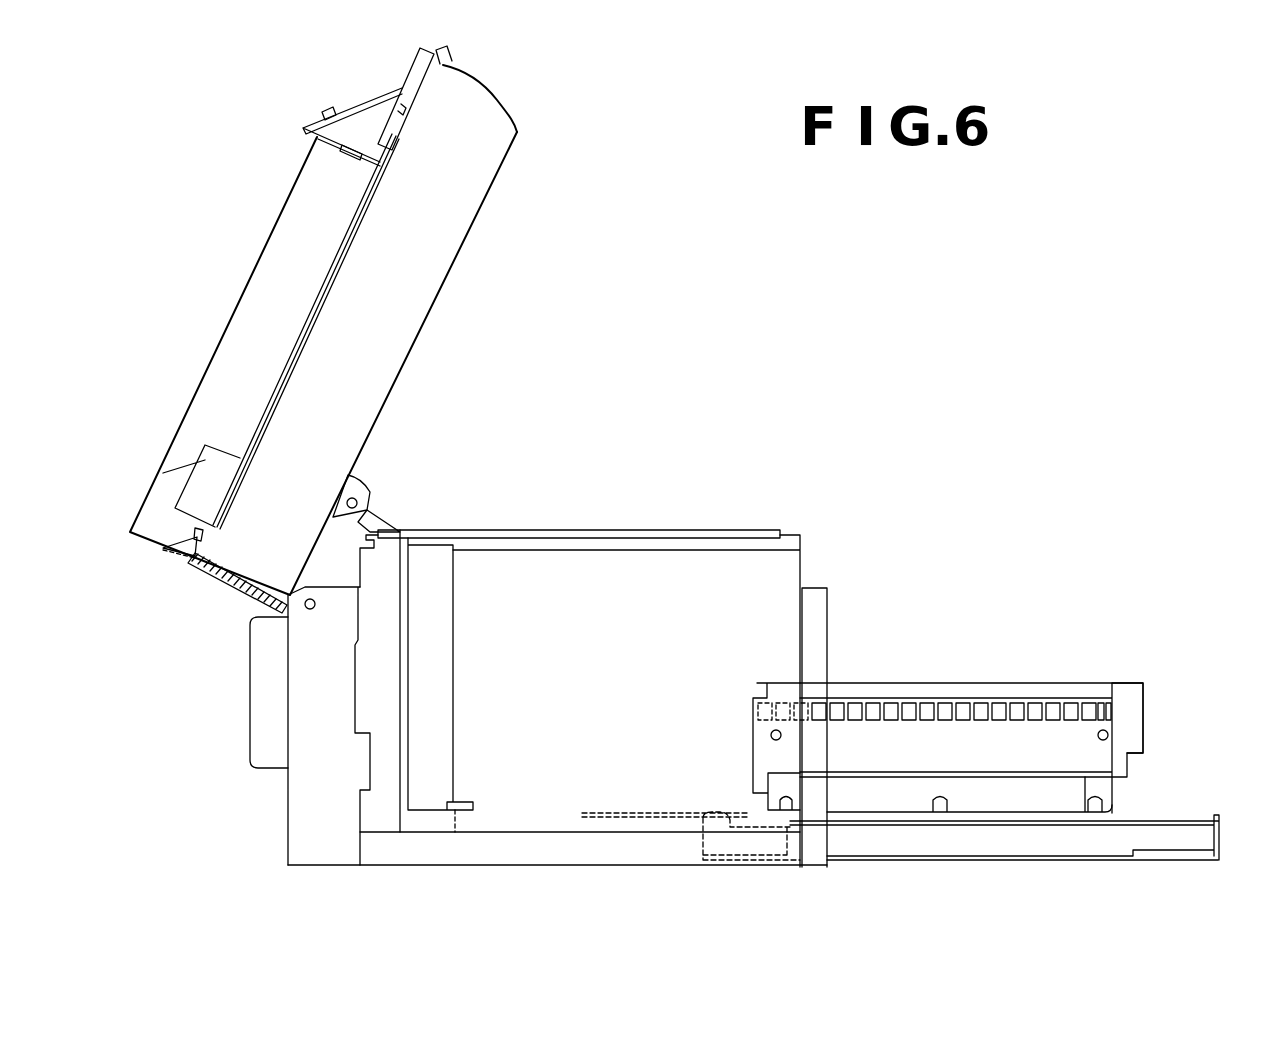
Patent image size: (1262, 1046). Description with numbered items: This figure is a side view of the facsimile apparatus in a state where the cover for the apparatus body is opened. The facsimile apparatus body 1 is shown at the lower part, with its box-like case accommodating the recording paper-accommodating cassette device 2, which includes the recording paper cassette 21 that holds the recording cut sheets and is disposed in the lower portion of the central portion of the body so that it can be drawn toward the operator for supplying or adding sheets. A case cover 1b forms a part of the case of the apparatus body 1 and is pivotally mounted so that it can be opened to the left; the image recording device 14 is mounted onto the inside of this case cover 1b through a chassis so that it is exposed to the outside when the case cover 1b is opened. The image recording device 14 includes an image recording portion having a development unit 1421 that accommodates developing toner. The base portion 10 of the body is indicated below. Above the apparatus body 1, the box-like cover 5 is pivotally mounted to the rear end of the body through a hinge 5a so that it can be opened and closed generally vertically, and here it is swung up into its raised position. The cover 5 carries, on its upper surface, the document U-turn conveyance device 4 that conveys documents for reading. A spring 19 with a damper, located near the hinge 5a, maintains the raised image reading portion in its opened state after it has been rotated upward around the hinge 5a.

The facsimile apparatus body 1 is at (427, 866).
The case cover 1b is at (641, 563).
The recording paper-accommodating cassette device 2 is at (1150, 733).
The document U-turn conveyance device 4 is at (293, 230).
The cover 5 is at (490, 110).
The hinge 5a is at (306, 610).
The bottom plate 10 is at (610, 853).
The image recording device 14 is at (948, 721).
The development unit 1421 is at (990, 688).
The spring 19 is at (379, 514).
The recording paper cassette 21 is at (1130, 823).